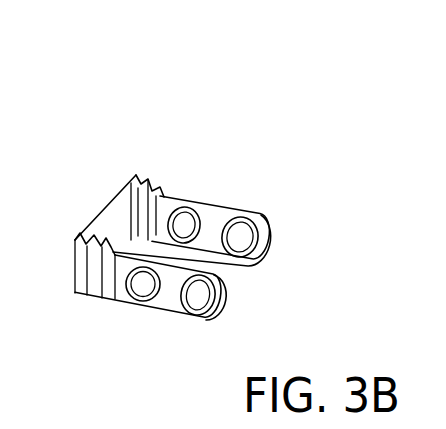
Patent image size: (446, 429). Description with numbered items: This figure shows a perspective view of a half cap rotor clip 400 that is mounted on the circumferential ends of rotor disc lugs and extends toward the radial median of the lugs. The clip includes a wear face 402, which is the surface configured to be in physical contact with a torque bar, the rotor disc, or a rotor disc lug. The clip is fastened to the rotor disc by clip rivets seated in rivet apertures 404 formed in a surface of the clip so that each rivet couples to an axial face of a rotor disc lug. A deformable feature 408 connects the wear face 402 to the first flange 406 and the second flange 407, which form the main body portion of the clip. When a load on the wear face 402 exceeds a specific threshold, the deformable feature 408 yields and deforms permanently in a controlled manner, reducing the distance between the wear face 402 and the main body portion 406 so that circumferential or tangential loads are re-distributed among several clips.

The half cap rotor clip 400 is at (141, 106).
The wear face 402 is at (115, 222).
The rivet aperture 404 is at (200, 298).
The first flange 406 is at (203, 239).
The second flange 407 is at (168, 302).
The deformable feature 408 is at (92, 267).